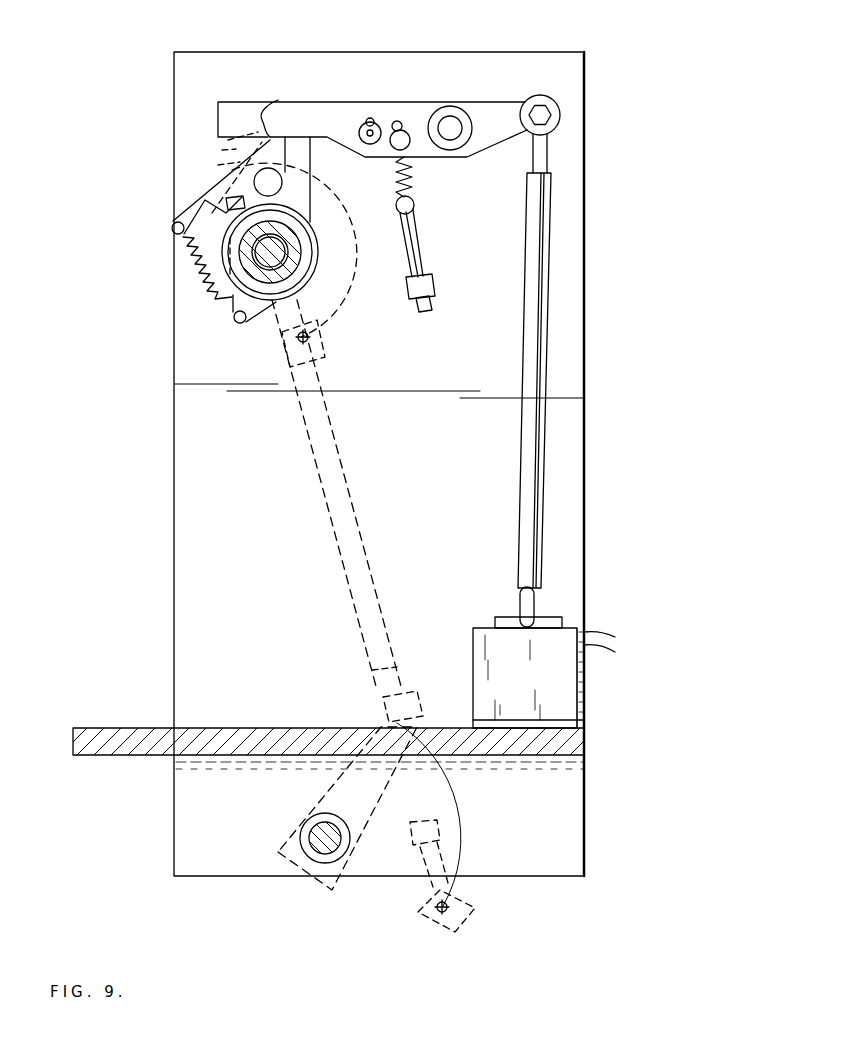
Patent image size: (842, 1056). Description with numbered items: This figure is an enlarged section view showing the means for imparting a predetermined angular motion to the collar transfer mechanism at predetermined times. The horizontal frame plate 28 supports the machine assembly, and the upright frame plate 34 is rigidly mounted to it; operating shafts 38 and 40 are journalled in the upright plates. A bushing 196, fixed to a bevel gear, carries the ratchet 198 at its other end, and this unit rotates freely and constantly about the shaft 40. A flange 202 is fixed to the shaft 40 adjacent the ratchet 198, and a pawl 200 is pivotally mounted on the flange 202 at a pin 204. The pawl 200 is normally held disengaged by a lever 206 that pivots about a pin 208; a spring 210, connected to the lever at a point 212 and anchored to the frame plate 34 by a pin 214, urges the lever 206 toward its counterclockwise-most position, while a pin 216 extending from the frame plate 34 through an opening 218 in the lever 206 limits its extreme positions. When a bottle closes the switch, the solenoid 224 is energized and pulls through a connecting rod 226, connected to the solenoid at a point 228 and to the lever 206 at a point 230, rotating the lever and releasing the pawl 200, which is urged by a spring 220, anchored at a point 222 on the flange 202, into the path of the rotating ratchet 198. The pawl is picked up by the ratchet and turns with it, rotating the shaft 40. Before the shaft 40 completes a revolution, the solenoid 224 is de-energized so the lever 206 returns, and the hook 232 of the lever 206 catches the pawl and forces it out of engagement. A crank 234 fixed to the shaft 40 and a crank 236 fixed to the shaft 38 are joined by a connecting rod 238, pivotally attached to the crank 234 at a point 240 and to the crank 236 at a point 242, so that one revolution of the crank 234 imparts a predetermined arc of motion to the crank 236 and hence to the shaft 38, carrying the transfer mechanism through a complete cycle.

The horizontal frame plate 28 is at (239, 727).
The upright frame plate 34 is at (244, 536).
The operating shaft 38 is at (310, 835).
The operating shaft 40 is at (290, 270).
The bushing 196 is at (300, 254).
The ratchet 198 is at (312, 237).
The pawl 200 is at (221, 187).
The flange 202 is at (310, 171).
The pin 204 is at (282, 190).
The lever 206 is at (350, 123).
The pin 208 is at (452, 130).
The spring 210 is at (410, 177).
The connection point 212 is at (411, 112).
The pin 214 is at (415, 234).
The pin 216 is at (366, 124).
The opening 218 is at (374, 145).
The spring 220 is at (222, 300).
The anchor point 222 is at (235, 322).
The solenoid 224 is at (530, 682).
The connecting rod 226 is at (522, 532).
The connection point 228 is at (536, 603).
The connection point 230 is at (541, 105).
The hook 232 is at (282, 84).
The crank 234 is at (224, 150).
The crank 236 is at (333, 786).
The connecting rod 238 is at (365, 547).
The pivot point 240 is at (222, 168).
The pivot point 242 is at (382, 712).